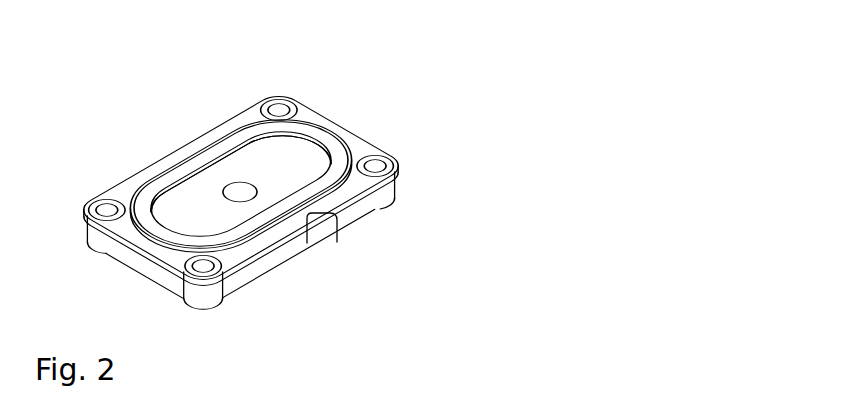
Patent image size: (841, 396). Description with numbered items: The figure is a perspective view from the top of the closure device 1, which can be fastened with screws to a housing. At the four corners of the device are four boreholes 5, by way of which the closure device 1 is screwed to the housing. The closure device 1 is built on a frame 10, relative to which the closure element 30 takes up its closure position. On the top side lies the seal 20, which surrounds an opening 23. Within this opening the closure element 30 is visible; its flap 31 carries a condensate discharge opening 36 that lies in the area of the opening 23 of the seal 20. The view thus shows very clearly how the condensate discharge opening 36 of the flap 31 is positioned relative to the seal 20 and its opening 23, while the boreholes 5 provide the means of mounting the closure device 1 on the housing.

The closure device 1 is at (283, 182).
The boreholes 5 is at (280, 112).
The frame 10 is at (130, 265).
The seal 20 is at (195, 150).
The opening of the seal 23 is at (255, 143).
The closure element 30 is at (212, 220).
The flap 31 is at (212, 220).
The condensate discharge opening 36 is at (253, 185).